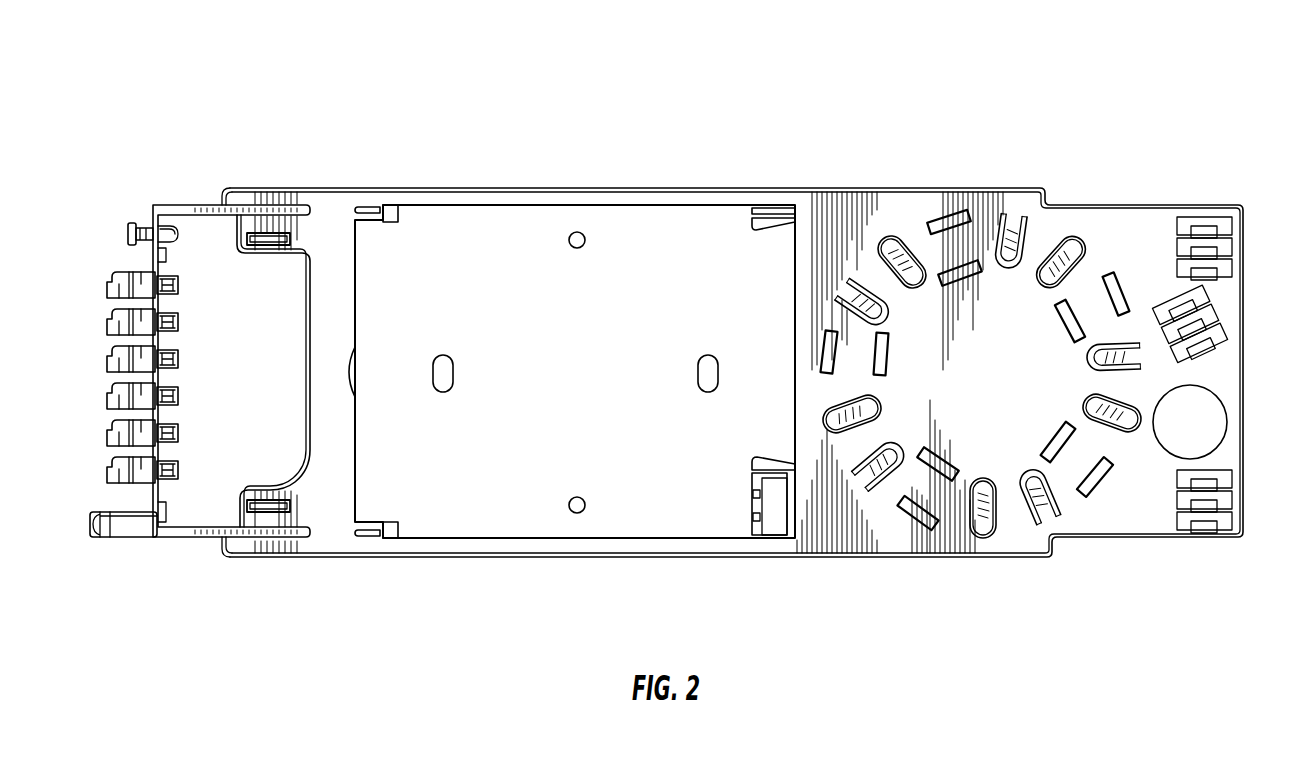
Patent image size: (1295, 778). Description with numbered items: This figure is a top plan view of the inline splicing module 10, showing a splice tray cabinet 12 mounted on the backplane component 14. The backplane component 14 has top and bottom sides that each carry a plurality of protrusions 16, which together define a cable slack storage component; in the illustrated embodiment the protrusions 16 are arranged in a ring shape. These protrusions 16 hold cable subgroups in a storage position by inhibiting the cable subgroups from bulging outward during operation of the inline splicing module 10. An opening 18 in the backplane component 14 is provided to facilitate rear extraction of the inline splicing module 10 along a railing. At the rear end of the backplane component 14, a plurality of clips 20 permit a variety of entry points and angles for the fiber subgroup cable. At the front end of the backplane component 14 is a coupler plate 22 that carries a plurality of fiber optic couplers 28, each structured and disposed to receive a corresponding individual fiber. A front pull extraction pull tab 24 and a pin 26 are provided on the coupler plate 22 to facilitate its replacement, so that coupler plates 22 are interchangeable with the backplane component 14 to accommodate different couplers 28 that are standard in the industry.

The inline splicing module 10 is at (812, 82).
The splice tray cabinet 12 is at (490, 201).
The backplane component 14 is at (624, 185).
The protrusions 16 is at (913, 242).
The opening 18 is at (1227, 412).
The clips 20 is at (1223, 227).
The coupler plate 22 is at (153, 258).
The front pull extraction pull tab 24 is at (98, 514).
The pin 26 is at (128, 224).
The fiber optic couplers 28 is at (93, 367).